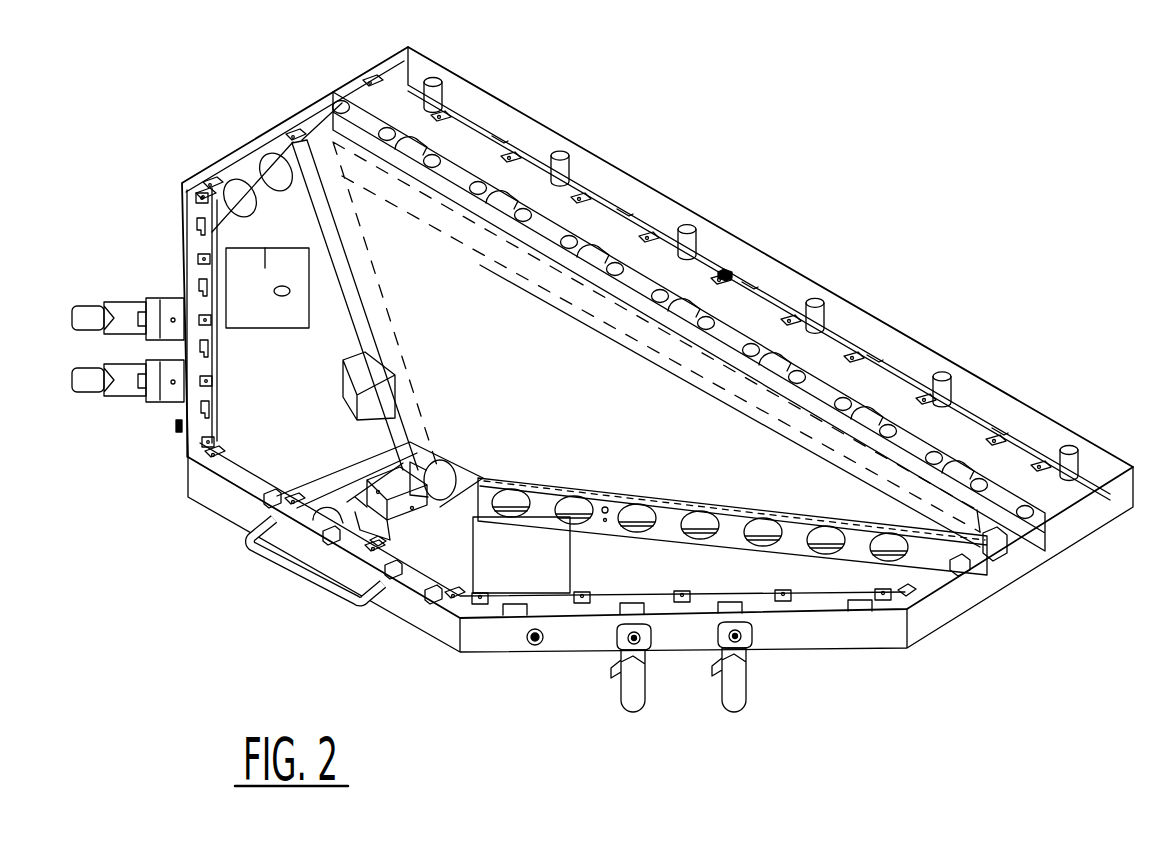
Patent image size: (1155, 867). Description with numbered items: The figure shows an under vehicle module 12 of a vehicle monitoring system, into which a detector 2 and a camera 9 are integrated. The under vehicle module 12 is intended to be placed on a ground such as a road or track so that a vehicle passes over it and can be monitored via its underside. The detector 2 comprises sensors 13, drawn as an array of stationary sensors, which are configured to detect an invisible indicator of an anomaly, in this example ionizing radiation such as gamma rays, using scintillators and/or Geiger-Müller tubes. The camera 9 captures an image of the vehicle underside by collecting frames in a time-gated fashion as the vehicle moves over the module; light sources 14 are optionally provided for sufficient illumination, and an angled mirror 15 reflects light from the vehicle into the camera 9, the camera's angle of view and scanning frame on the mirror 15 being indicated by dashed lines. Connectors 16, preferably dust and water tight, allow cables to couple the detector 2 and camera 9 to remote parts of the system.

The detector 2 is at (602, 400).
The camera 9 is at (460, 484).
The under vehicle module 12 is at (1000, 215).
The sensors 13 is at (815, 300).
The light sources 14 is at (962, 455).
The angled mirror 15 is at (932, 500).
The connectors 16 is at (734, 693).